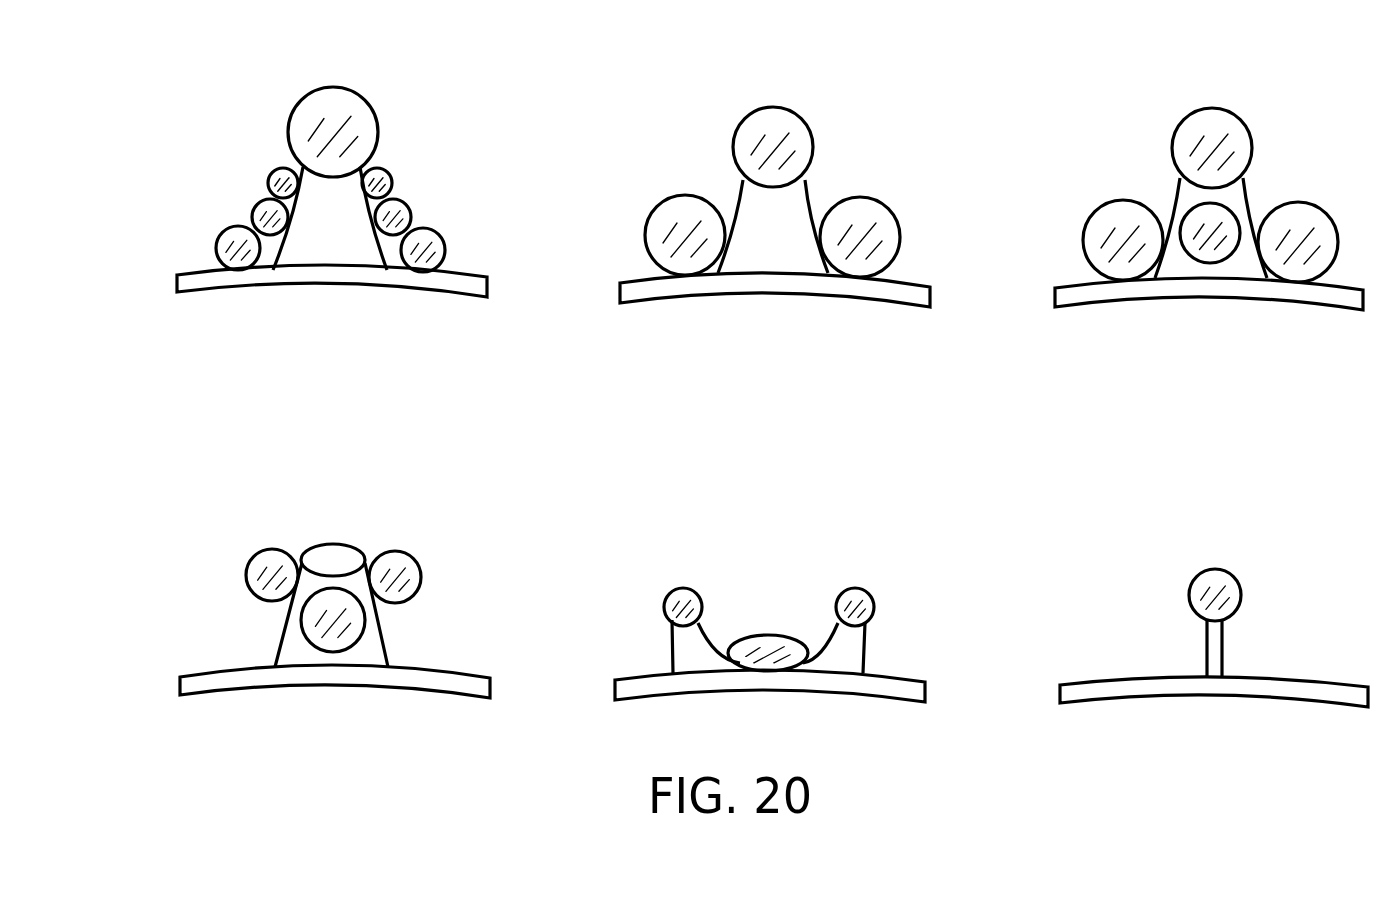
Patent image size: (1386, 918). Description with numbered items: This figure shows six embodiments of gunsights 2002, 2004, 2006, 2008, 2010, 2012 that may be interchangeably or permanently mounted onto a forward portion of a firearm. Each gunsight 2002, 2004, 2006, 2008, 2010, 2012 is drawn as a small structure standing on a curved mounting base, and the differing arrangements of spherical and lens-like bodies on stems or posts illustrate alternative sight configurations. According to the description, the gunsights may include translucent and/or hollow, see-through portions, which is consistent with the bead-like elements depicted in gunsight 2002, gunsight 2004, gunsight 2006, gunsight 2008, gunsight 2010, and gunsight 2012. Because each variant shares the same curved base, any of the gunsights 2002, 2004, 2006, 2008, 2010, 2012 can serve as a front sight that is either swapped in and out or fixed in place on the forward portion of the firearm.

The gunsight 2002 is at (260, 82).
The gunsight 2004 is at (637, 115).
The gunsight 2006 is at (1087, 140).
The gunsight 2008 is at (257, 520).
The gunsight 2010 is at (670, 492).
The gunsight 2012 is at (1100, 564).